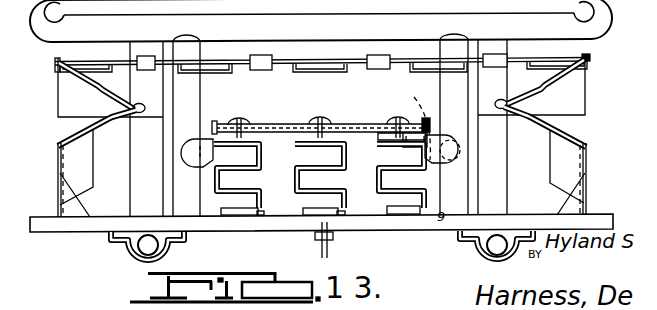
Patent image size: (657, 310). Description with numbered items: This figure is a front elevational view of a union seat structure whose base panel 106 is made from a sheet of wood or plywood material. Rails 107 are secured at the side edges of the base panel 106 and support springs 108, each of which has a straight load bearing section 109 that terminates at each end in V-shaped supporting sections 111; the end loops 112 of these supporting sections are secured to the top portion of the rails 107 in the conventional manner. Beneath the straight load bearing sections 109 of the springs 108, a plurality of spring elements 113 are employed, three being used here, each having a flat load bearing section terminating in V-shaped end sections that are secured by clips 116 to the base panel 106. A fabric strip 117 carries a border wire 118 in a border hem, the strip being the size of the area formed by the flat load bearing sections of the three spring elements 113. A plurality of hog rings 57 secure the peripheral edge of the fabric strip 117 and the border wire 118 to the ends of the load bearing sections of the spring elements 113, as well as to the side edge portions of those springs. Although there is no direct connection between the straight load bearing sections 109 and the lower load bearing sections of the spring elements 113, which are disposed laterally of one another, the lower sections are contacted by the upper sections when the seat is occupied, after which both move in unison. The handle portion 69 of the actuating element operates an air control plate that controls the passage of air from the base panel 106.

The hog rings 57 is at (318, 124).
The handle portion 69 is at (329, 248).
The base panel 106 is at (600, 213).
The rails 107 is at (80, 167).
The springs 108 is at (281, 77).
The straight load bearing section 109 is at (319, 148).
The V-shaped supporting sections 111 is at (90, 89).
The end loops 112 is at (80, 126).
The spring elements 113 is at (428, 195).
The clips 116 is at (443, 216).
The fabric strip 117 is at (340, 122).
The border wire 118 is at (412, 116).